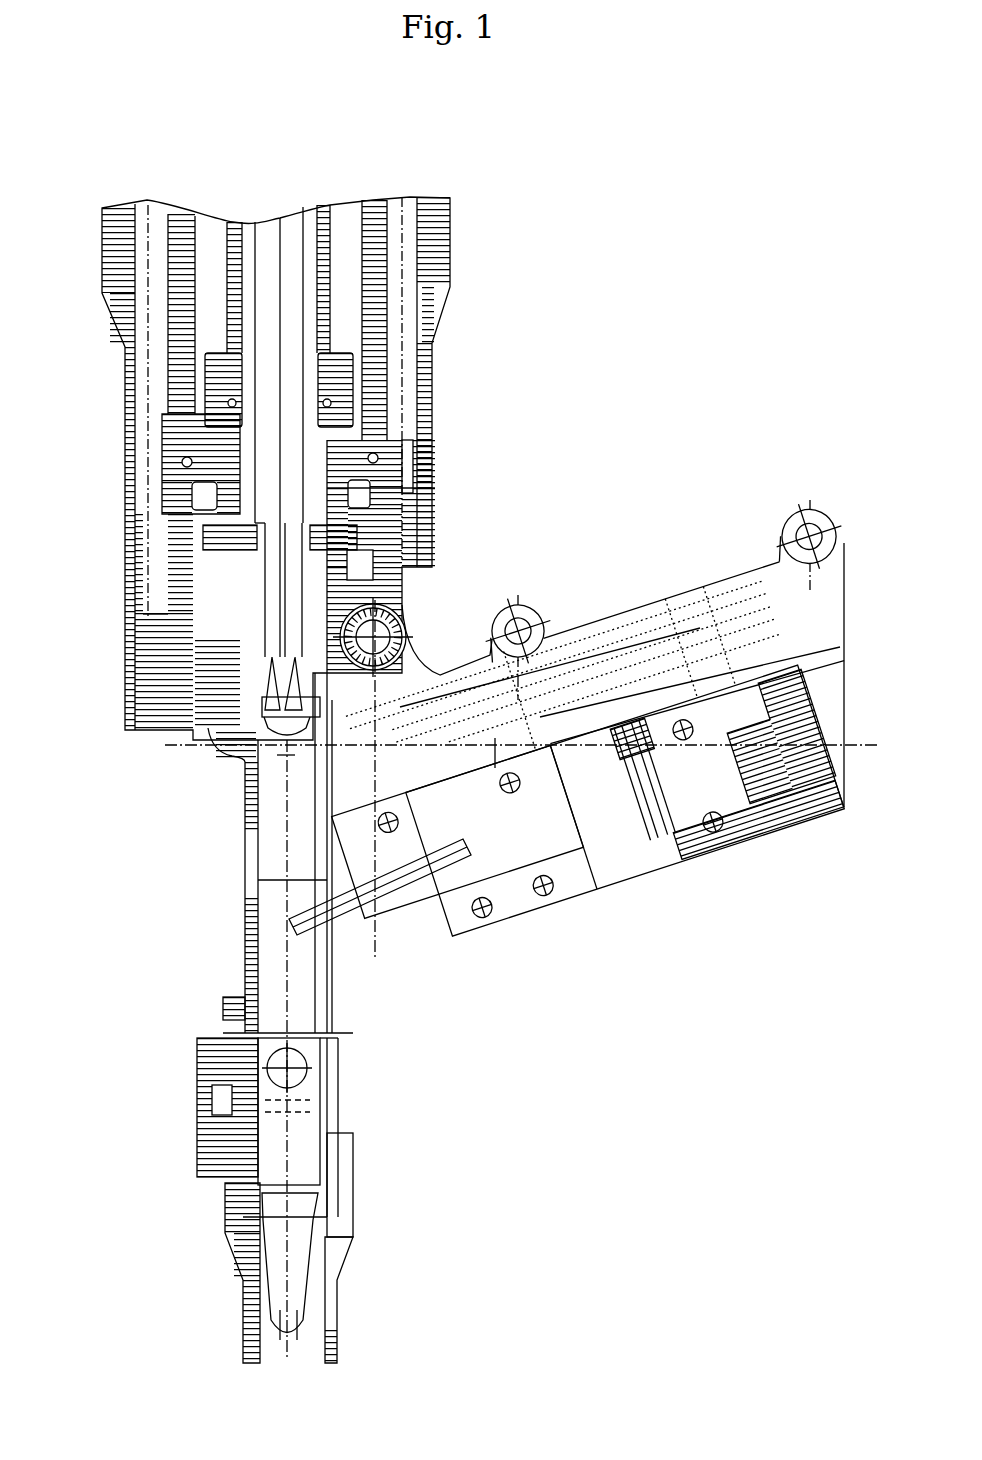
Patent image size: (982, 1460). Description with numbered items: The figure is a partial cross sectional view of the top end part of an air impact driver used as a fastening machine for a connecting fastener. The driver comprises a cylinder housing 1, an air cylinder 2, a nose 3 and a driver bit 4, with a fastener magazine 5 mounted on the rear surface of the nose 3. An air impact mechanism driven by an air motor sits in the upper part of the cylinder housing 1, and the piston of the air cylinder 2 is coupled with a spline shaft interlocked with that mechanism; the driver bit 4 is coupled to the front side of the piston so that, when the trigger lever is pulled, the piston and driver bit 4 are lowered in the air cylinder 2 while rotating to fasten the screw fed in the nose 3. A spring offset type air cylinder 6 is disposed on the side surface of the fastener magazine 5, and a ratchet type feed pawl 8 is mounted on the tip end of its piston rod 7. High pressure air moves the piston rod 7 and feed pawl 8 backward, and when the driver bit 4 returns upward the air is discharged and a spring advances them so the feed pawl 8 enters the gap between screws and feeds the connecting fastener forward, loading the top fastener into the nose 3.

The cylinder housing 1 is at (125, 488).
The air cylinder 2 is at (332, 240).
The nose 3 is at (245, 955).
The driver bit 4 is at (287, 242).
The fastener magazine 5 is at (668, 588).
The air cylinder 6 is at (773, 813).
The piston rod 7 is at (555, 832).
The feed pawl 8 is at (293, 923).